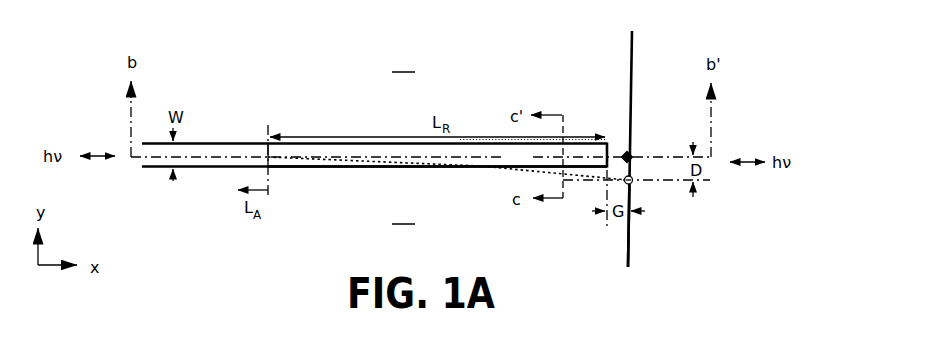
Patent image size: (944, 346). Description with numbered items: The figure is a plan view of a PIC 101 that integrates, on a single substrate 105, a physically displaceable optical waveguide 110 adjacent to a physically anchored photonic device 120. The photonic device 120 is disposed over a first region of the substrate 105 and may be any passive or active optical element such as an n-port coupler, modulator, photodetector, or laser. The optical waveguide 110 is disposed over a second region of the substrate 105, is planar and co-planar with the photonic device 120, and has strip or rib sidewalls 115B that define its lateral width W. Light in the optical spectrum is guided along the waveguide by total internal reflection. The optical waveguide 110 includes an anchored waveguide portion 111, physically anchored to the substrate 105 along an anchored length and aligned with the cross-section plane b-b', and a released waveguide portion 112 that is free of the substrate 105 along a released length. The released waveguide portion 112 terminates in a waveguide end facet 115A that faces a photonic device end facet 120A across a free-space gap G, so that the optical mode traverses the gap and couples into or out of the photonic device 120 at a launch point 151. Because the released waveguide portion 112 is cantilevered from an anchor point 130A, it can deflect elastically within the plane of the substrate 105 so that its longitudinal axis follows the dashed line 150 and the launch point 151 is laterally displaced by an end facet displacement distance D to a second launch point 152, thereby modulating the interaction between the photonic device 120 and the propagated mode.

The PIC 101 is at (99, 47).
The substrate 105 is at (403, 141).
The optical waveguide 110 is at (420, 157).
The anchored waveguide portion 111 is at (228, 170).
The released waveguide portion 112 is at (327, 170).
The waveguide end facet 115A is at (612, 140).
The strip or rib sidewalls 115B is at (257, 139).
The photonic device 120 is at (658, 110).
The photonic device end facet 120A is at (624, 255).
The anchor point 130A is at (268, 121).
The dashed line 150 is at (573, 176).
The launch point 151 is at (634, 150).
The launch point 152 is at (635, 184).